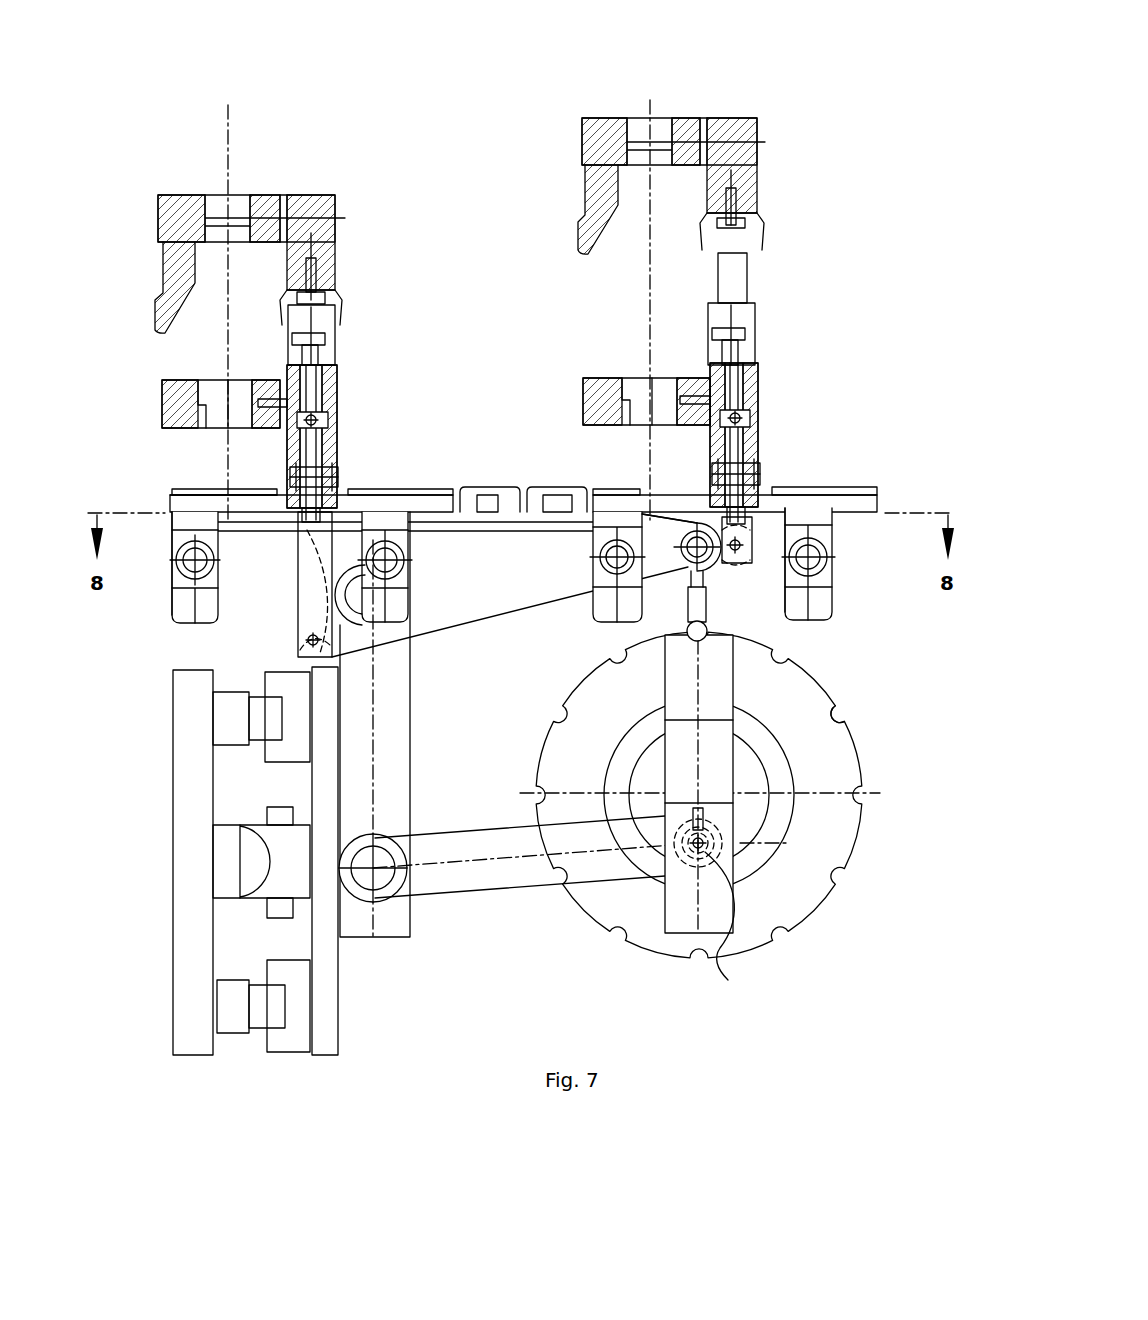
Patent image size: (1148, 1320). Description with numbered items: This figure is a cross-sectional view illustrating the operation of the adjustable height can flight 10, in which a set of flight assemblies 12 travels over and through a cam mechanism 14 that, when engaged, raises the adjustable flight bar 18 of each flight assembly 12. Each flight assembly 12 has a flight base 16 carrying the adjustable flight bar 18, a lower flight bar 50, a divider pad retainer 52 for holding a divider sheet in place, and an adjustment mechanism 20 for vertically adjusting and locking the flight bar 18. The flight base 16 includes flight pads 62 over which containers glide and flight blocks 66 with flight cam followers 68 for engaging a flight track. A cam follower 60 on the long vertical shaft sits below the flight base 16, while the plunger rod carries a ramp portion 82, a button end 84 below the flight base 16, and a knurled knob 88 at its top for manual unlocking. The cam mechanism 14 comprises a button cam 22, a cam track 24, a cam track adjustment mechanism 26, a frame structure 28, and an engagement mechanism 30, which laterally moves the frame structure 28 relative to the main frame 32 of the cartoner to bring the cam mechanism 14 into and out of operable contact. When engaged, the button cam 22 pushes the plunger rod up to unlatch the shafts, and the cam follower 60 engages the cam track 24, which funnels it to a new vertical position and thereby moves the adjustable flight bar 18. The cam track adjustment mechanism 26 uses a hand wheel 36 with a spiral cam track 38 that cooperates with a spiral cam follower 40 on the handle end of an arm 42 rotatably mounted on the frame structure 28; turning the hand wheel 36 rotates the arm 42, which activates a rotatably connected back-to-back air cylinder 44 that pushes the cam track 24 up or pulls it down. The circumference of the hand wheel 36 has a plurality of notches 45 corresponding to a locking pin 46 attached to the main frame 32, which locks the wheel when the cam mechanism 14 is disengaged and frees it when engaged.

The adjustable height can flight 10 is at (392, 158).
The flight assembly 12 is at (193, 180).
The cam mechanism 14 is at (150, 656).
The flight base 16 is at (442, 478).
The adjustable flight bar 18 is at (158, 205).
The adjustment mechanism 20 is at (350, 436).
The button cam 22 is at (677, 510).
The cam track 24 is at (528, 620).
The cam track adjustment mechanism 26 is at (880, 680).
The frame structure 28 is at (390, 965).
The engagement mechanism 30 is at (325, 1075).
The main frame 32 is at (208, 1058).
The hand wheel 36 is at (818, 905).
The spiral cam track 38 is at (815, 818).
The spiral cam follower 40 is at (726, 925).
The arm 42 is at (535, 893).
The back-to-back air cylinder 44 is at (692, 720).
The notches 45 is at (846, 708).
The locking pin 46 is at (708, 618).
The lower flight bar 50 is at (162, 388).
The divider pad retainer 52 is at (158, 270).
The cam follower 60 is at (300, 638).
The flight pads 62 is at (195, 490).
The flight blocks 66 is at (172, 597).
The flight cam followers 68 is at (832, 548).
The ramp portion 82 is at (338, 415).
The button end 84 is at (300, 522).
The knurled knob 88 is at (334, 335).